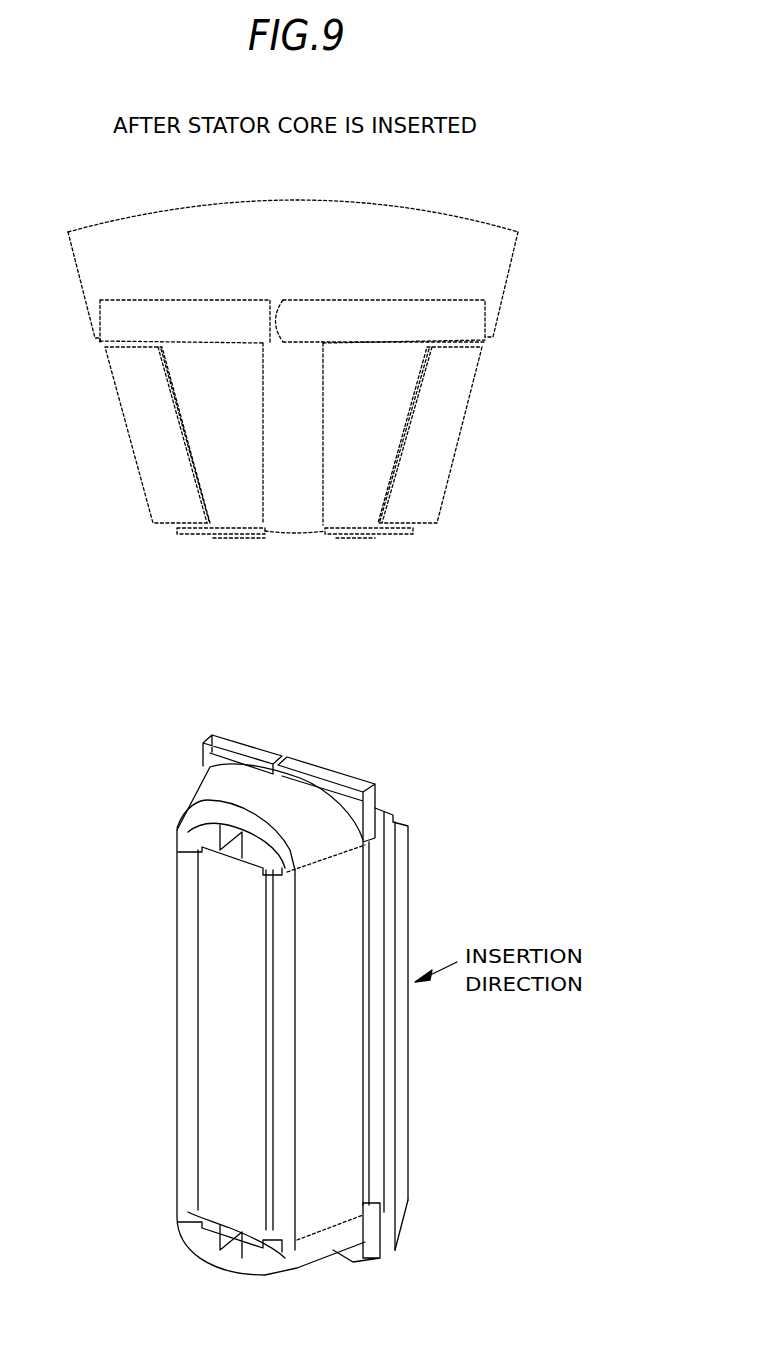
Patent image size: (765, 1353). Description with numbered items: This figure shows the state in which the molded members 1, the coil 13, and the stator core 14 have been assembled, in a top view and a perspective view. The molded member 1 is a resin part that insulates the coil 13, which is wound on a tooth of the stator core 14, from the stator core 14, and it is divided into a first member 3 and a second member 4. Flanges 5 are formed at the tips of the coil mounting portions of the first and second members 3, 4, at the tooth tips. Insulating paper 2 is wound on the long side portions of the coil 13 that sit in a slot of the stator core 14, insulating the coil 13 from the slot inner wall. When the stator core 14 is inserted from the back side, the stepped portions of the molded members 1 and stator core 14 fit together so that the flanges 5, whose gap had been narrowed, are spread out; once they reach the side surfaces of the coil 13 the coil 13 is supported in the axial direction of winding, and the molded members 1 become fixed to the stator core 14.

The molded member 1 is at (341, 734).
The insulating paper 2 is at (342, 962).
The first member 3 is at (170, 308).
The second member 4 is at (418, 308).
The flange 5 is at (190, 536).
The coil 13 is at (220, 788).
The stator core 14 is at (405, 225).